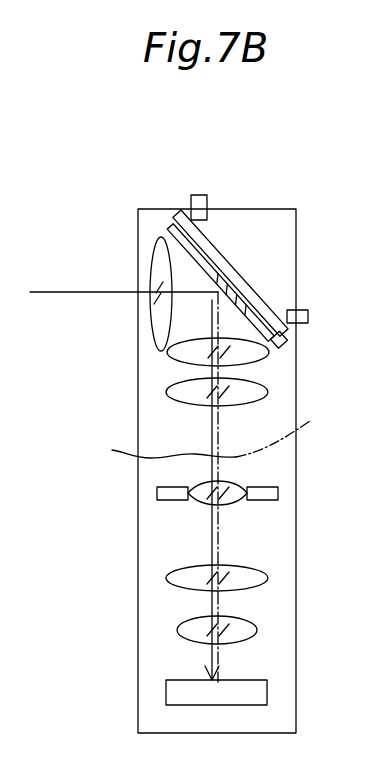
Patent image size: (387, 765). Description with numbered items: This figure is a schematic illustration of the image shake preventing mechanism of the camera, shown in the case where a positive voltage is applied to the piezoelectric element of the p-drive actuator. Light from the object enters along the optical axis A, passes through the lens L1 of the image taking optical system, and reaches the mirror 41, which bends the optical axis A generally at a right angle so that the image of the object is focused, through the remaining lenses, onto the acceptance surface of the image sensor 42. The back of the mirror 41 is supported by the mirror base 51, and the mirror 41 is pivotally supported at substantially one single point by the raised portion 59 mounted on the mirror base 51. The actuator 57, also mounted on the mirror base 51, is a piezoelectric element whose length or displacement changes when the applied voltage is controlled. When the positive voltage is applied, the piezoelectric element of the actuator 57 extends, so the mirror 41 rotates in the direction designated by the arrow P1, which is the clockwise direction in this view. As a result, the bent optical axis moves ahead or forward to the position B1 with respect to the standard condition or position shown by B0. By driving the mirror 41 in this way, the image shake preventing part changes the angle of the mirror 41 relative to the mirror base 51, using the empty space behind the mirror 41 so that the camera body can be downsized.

The arrow P1 is at (132, 186).
The optical axis A is at (63, 292).
The lens L1 is at (157, 317).
The raised portion 59 is at (235, 276).
The actuator 57 is at (261, 300).
The mirror base 51 is at (264, 304).
The mirror 41 is at (266, 364).
The optical axis B1 is at (158, 447).
The optical axis B0 is at (310, 421).
The image sensor 42 is at (252, 680).